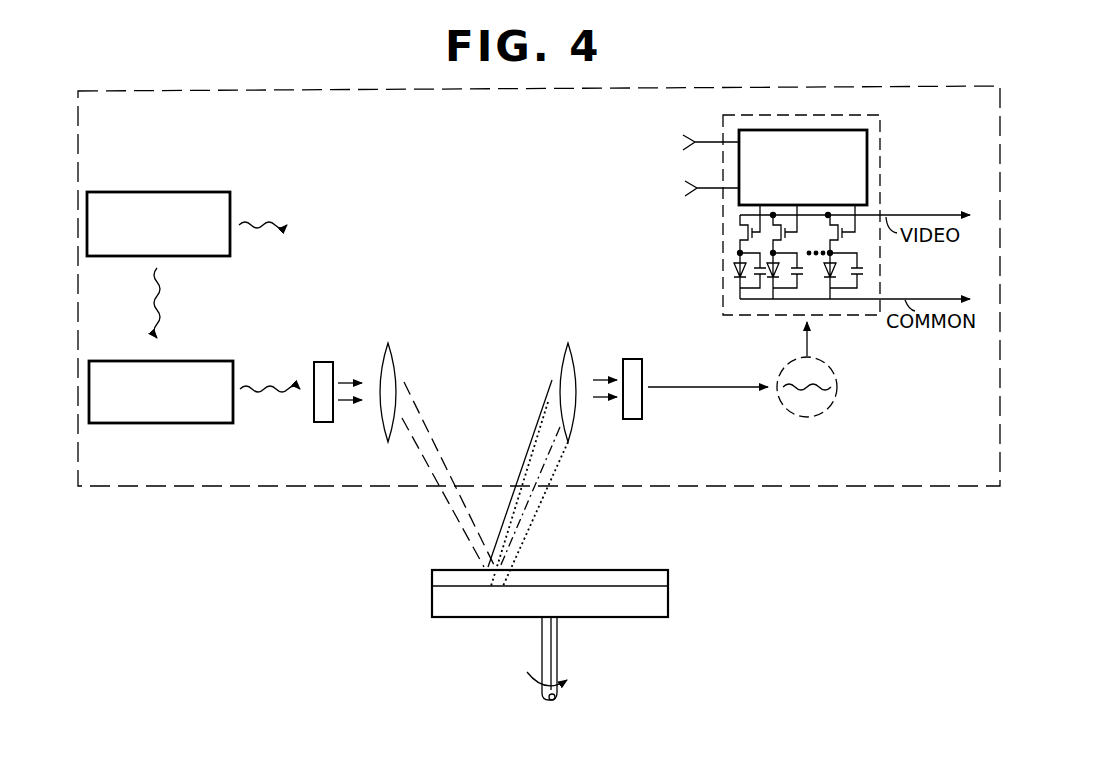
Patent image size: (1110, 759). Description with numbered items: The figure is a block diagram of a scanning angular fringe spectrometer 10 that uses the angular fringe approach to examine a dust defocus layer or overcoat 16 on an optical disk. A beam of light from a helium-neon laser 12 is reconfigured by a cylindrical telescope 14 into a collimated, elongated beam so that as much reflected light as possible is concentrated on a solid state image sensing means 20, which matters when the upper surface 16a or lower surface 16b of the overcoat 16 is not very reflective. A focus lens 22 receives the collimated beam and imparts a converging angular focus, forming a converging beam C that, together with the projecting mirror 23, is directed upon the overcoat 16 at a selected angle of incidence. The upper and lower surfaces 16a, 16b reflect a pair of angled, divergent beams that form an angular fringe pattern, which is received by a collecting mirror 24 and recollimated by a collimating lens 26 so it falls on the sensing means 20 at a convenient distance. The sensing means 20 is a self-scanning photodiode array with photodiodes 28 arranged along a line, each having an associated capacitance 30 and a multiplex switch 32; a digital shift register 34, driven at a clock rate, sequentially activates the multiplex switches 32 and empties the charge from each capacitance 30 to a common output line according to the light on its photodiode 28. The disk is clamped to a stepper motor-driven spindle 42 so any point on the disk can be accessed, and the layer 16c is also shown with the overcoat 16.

The scanning angular fringe spectrometer 10 is at (199, 107).
The helium-neon laser 12 is at (185, 200).
The cylindrical telescope 14 is at (200, 365).
The overcoat 16 is at (438, 582).
The upper surface 16a is at (643, 568).
The lower surface 16b is at (663, 583).
The substrate layer of sample 16c is at (643, 615).
The solid state image sensing means 20 is at (880, 112).
The focus lens 22 is at (322, 413).
The projecting mirror 23 is at (380, 417).
The collecting mirror 24 is at (570, 412).
The collimating lens 26 is at (632, 410).
The photodiodes 28 is at (734, 268).
The capacitance 30 is at (768, 284).
The multiplex switch 32 is at (738, 232).
The digital shift register 34 is at (855, 180).
The stepper motor-driven spindle 42 is at (548, 650).
The converging beam C is at (438, 455).